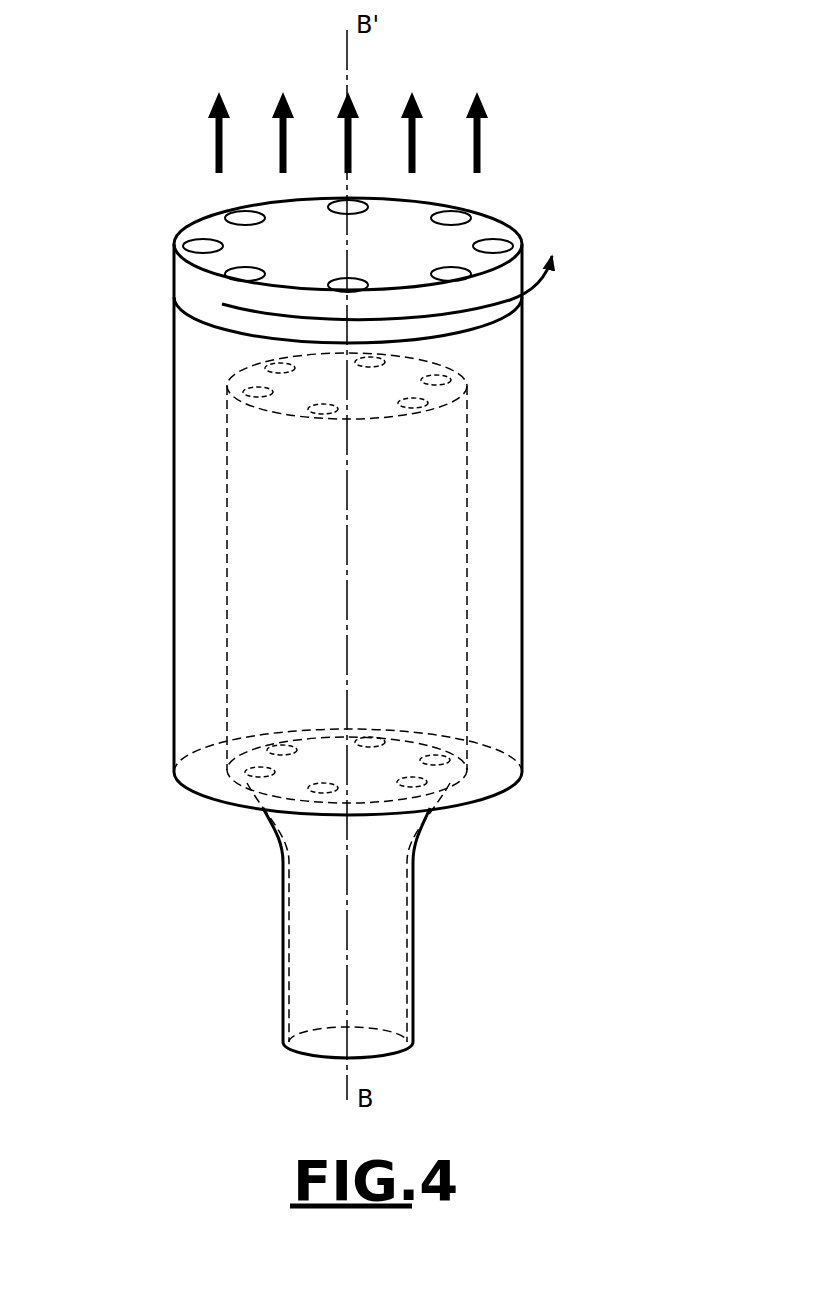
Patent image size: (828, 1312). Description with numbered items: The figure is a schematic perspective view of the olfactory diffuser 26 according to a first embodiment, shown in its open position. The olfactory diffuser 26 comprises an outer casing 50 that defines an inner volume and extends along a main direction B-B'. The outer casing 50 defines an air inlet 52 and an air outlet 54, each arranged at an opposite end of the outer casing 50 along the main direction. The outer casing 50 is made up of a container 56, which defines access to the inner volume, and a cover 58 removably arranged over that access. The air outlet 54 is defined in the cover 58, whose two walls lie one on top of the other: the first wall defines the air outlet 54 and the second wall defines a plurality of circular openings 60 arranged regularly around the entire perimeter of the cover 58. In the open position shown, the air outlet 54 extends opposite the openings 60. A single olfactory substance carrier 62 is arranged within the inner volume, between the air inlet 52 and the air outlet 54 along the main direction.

The olfactory diffuser 26 is at (622, 330).
The outer casing 50 is at (158, 421).
The air inlet 52 is at (305, 820).
The air outlet 54 is at (497, 203).
The container 56 is at (522, 563).
The cover 58 is at (174, 269).
The openings 60 is at (238, 221).
The olfactory substance carrier 62 is at (466, 650).